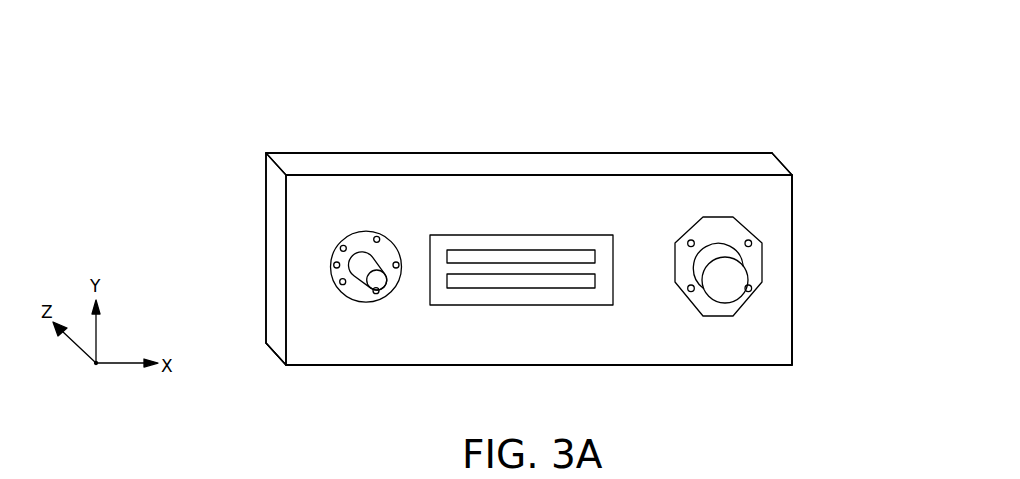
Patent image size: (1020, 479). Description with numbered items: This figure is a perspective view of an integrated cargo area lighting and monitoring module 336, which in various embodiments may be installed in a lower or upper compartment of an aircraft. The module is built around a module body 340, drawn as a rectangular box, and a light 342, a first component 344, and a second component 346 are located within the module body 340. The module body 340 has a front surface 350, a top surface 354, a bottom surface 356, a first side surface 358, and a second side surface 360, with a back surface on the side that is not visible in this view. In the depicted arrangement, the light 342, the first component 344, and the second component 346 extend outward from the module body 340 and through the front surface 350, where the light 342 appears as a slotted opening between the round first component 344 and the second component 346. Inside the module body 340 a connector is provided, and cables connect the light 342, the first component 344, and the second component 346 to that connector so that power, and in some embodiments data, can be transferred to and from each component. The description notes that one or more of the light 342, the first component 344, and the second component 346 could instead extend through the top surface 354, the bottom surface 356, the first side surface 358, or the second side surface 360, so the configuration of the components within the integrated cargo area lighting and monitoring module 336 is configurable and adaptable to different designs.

The integrated cargo area lighting and monitoring module 336 is at (150, 86).
The module body 340 is at (836, 193).
The light 342 is at (452, 246).
The first component 344 is at (357, 245).
The second component 346 is at (720, 245).
The front surface 350 is at (760, 347).
The top surface 354 is at (750, 165).
The bottom surface 356 is at (640, 365).
The first side surface 358 is at (277, 253).
The second side surface 360 is at (793, 280).